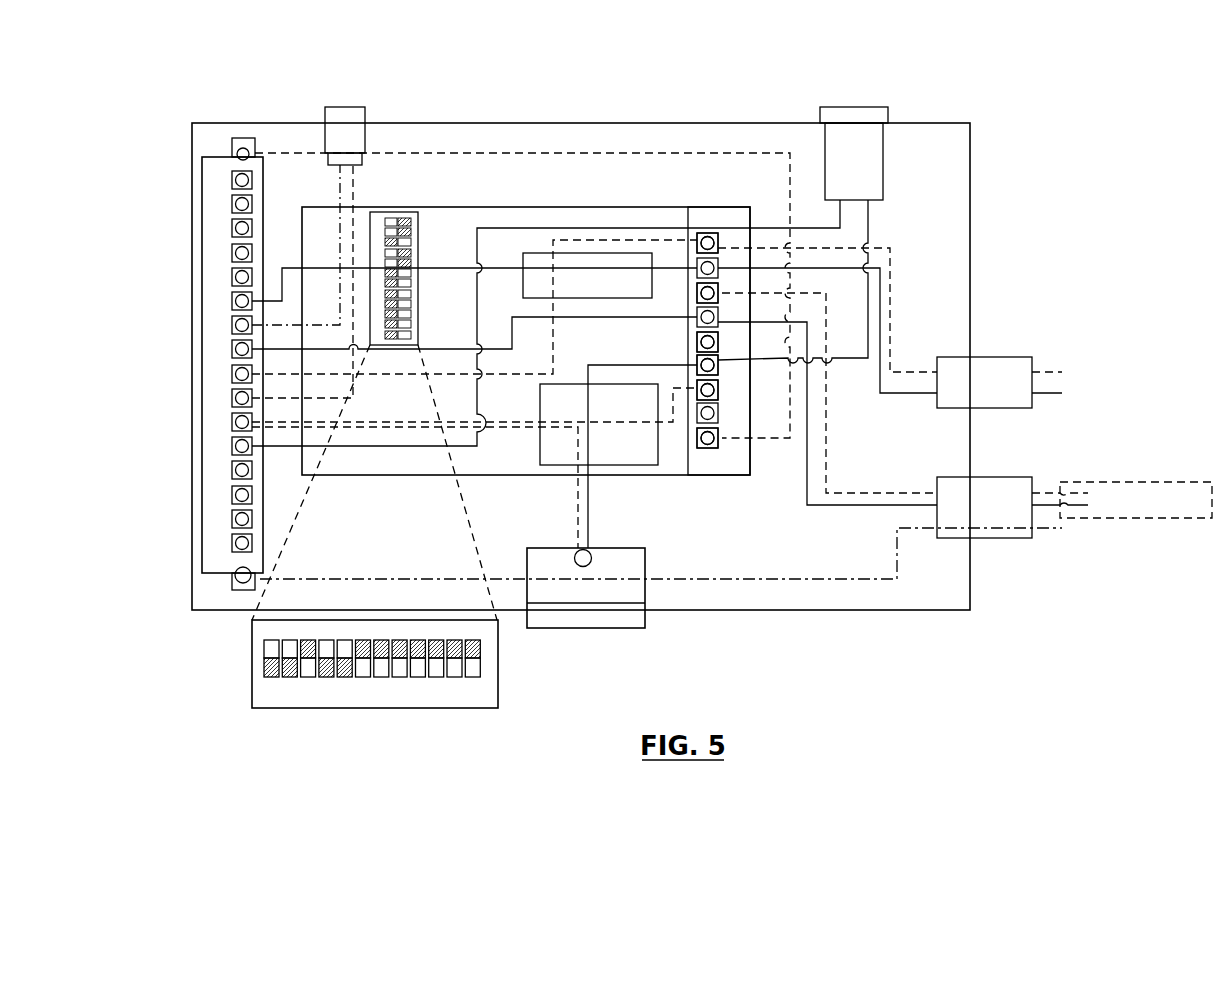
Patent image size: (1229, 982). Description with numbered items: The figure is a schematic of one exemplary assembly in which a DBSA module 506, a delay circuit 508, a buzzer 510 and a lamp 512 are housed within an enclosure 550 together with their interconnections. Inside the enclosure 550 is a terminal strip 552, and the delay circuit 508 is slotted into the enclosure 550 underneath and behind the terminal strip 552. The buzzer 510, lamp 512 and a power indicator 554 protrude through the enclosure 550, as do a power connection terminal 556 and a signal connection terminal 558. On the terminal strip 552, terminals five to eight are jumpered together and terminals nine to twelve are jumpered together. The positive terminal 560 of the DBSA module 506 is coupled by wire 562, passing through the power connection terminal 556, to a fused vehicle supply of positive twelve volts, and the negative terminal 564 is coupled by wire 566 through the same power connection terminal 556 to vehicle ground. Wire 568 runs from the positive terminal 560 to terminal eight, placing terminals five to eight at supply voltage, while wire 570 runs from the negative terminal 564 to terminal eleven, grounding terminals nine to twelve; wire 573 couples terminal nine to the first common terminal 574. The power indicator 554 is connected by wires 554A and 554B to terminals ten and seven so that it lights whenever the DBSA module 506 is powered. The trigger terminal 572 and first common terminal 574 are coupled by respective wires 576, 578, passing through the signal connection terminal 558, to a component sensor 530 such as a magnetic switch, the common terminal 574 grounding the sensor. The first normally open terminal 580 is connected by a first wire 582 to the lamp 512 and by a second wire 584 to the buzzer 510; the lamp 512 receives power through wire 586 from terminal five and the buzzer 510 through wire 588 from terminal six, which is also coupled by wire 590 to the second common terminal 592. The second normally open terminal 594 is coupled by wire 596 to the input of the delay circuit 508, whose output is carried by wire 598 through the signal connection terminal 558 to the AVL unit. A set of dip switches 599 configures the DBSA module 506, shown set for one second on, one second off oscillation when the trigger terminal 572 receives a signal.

The enclosure 550 is at (198, 122).
The terminal strip 552 is at (213, 156).
The delay circuit 508 is at (248, 138).
The power indicator 554 is at (350, 107).
The wire 554A is at (337, 187).
The wire 554B is at (355, 187).
The wire 596 is at (520, 152).
The DBSA module 506 is at (597, 207).
The dip switches 599 is at (420, 230).
The wire 570 is at (437, 268).
The wire 573 is at (433, 347).
The wire 586 is at (528, 227).
The wire 568 is at (502, 375).
The wire 588 is at (577, 510).
The negative terminal 564 is at (697, 268).
The positive terminal 560 is at (710, 233).
The trigger terminal 572 is at (719, 306).
The first common terminal 574 is at (719, 342).
The first normally open terminal 580 is at (697, 360).
The second common terminal 592 is at (720, 386).
The second normally open terminal 594 is at (705, 475).
The second wire 584 is at (600, 367).
The wire 590 is at (623, 420).
The buzzer 510 is at (623, 629).
The lamp 512 is at (890, 117).
The first wire 582 is at (868, 222).
The wire 562 is at (890, 262).
The wire 566 is at (893, 395).
The power connection terminal 556 is at (1015, 357).
The wire 578 is at (820, 507).
The wire 576 is at (830, 462).
The signal connection terminal 558 is at (1010, 477).
The component sensor 530 is at (1162, 482).
The wire 598 is at (858, 580).